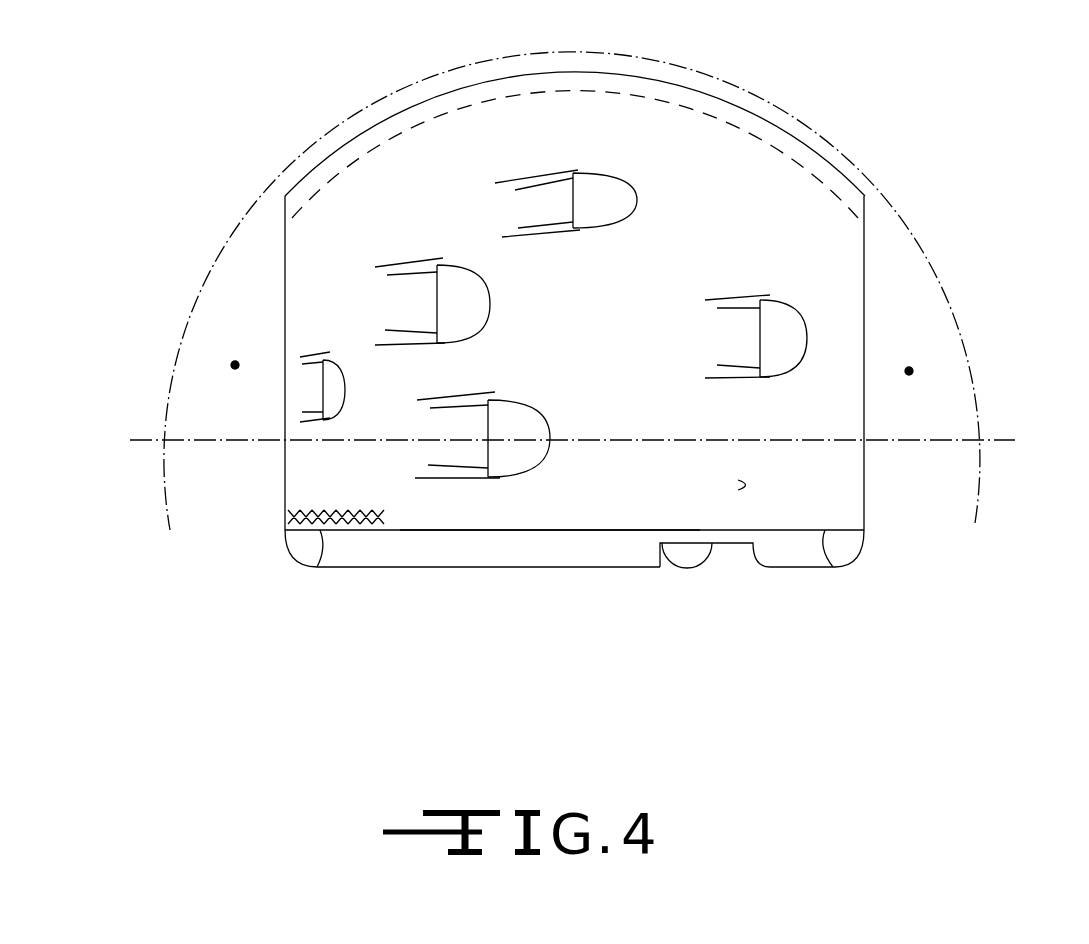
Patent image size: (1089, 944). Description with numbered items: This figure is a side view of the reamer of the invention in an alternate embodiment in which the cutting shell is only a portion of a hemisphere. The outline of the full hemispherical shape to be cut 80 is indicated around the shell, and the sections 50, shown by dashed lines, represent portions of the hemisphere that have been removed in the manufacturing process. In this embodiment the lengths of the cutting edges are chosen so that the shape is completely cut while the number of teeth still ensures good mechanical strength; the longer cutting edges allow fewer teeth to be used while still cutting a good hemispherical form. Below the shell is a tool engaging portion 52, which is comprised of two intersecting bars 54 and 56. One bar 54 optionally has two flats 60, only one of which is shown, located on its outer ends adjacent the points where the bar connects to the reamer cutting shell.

The shape to be cut 80 is at (188, 325).
The sections 50 is at (235, 365).
The tool engaging portion 52 is at (405, 572).
The bar 54 is at (488, 540).
The bar 56 is at (615, 540).
The flats 60 is at (743, 550).